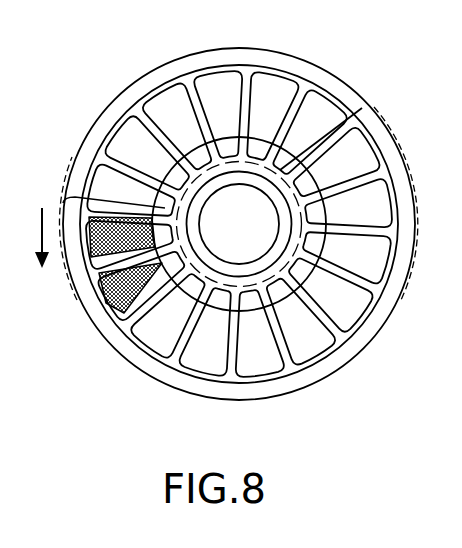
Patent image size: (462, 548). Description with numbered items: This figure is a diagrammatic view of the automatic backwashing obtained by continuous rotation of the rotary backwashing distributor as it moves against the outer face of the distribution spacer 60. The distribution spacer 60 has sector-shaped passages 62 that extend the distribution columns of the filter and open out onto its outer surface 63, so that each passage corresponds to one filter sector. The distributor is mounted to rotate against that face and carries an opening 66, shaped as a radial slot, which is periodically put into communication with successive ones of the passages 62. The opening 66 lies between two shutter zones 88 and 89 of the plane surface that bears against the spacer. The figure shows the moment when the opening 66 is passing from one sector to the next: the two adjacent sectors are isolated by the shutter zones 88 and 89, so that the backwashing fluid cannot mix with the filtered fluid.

The distribution spacer 60 is at (349, 90).
The sector-shaped passages 62 is at (252, 360).
The outer surface 63 is at (280, 62).
The opening 66 is at (100, 284).
The shutter zone 88 is at (123, 300).
The shutter zone 89 is at (116, 217).